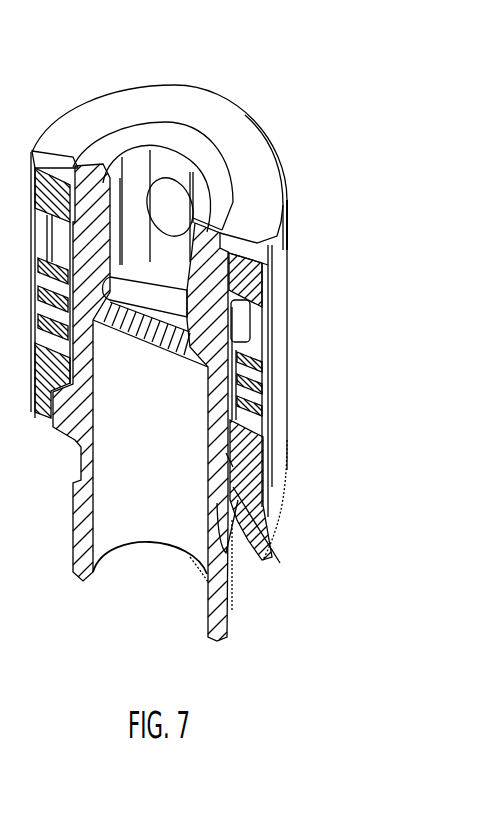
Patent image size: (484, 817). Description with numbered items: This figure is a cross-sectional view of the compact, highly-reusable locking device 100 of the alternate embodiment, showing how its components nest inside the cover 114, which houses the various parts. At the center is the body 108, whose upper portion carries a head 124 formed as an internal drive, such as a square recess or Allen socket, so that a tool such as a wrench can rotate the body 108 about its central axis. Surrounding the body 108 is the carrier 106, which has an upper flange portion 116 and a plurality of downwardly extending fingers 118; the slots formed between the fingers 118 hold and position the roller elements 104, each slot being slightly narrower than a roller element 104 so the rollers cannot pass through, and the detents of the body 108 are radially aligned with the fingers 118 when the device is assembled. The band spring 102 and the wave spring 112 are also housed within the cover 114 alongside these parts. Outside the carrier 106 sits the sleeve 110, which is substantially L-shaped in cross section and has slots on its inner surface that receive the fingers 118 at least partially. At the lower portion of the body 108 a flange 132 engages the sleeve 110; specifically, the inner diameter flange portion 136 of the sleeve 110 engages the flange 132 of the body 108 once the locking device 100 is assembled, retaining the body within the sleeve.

The locking device 100 is at (294, 163).
The band spring 102 is at (263, 335).
The roller elements 104 is at (236, 327).
The carrier 106 is at (264, 289).
The body 108 is at (234, 587).
The sleeve 110 is at (256, 467).
The wave spring 112 is at (255, 396).
The cover 114 is at (288, 203).
The flange portion 116 is at (252, 277).
The fingers 118 is at (238, 396).
The head 124 is at (176, 182).
The flange 132 is at (272, 536).
The inner diameter flange portion 136 is at (230, 467).